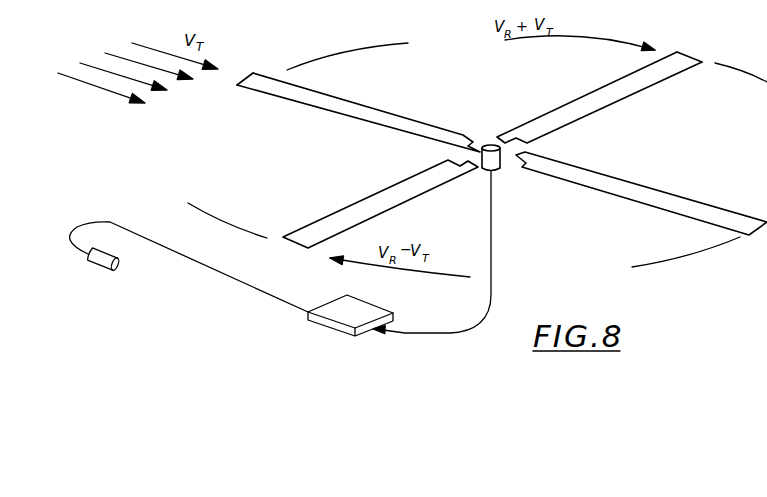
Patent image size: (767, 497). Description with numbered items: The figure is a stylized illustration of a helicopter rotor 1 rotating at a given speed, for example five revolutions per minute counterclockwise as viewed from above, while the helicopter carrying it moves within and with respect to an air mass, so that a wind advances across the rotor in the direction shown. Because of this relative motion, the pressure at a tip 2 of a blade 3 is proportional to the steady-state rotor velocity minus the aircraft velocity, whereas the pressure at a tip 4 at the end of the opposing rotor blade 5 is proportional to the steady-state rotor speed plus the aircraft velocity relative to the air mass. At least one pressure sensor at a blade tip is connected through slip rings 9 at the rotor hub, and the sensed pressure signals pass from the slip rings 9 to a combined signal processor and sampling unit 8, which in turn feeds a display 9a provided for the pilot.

The helicopter rotor 1 is at (337, 140).
The tip 2 is at (312, 246).
The blade 3 is at (359, 224).
The tip 4 is at (681, 53).
The opposing rotor blade 5 is at (610, 108).
The combined signal processor and sampling unit 8 is at (332, 327).
The slip rings 9 is at (502, 157).
The display 9a is at (97, 266).